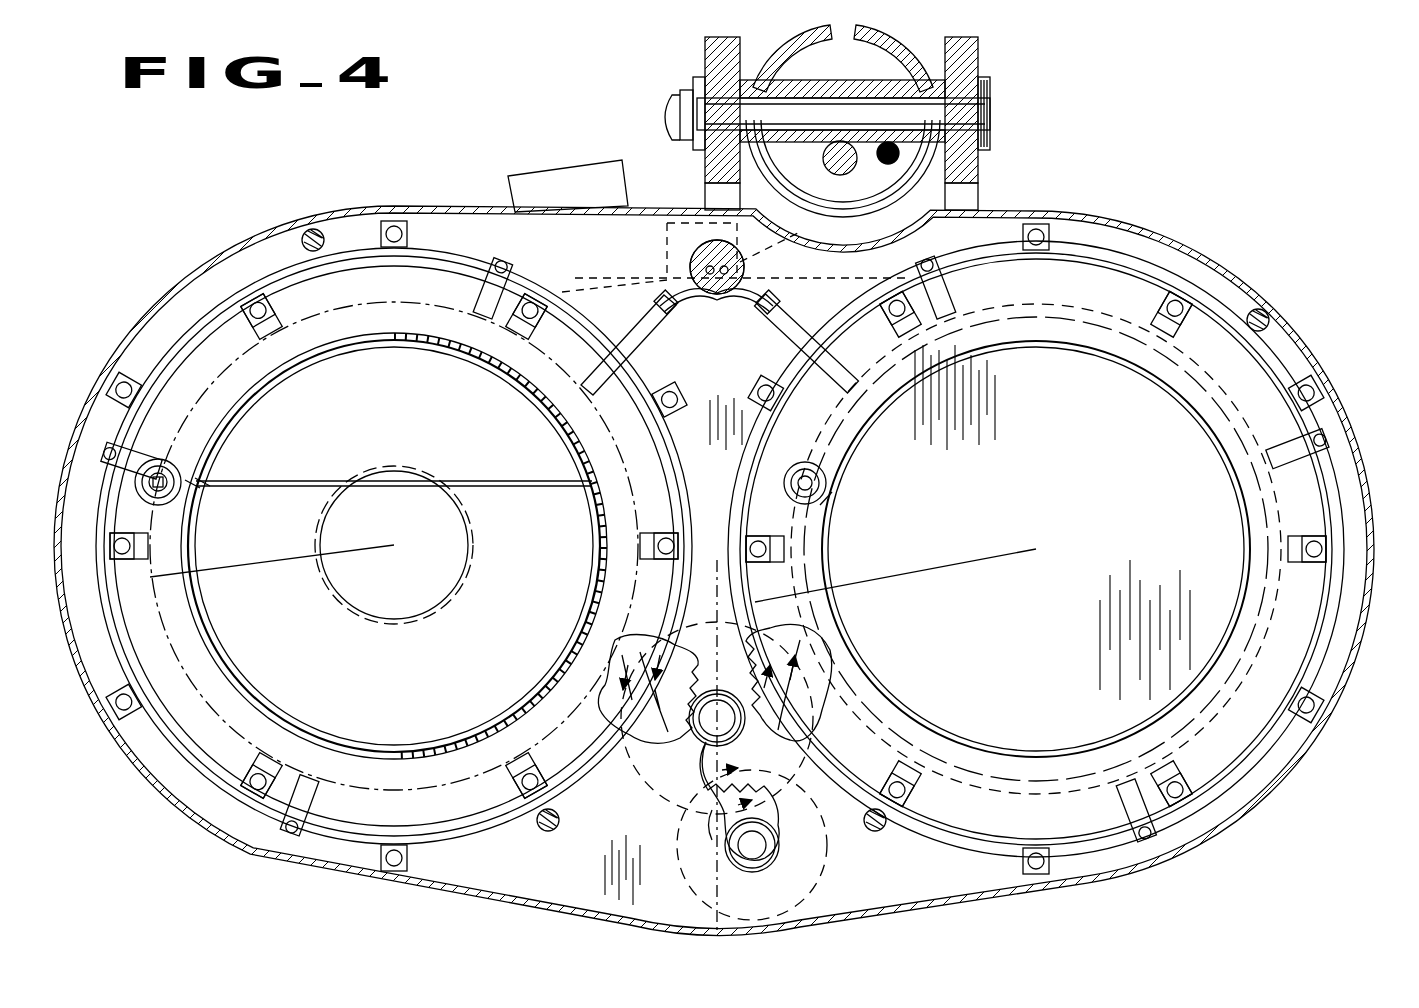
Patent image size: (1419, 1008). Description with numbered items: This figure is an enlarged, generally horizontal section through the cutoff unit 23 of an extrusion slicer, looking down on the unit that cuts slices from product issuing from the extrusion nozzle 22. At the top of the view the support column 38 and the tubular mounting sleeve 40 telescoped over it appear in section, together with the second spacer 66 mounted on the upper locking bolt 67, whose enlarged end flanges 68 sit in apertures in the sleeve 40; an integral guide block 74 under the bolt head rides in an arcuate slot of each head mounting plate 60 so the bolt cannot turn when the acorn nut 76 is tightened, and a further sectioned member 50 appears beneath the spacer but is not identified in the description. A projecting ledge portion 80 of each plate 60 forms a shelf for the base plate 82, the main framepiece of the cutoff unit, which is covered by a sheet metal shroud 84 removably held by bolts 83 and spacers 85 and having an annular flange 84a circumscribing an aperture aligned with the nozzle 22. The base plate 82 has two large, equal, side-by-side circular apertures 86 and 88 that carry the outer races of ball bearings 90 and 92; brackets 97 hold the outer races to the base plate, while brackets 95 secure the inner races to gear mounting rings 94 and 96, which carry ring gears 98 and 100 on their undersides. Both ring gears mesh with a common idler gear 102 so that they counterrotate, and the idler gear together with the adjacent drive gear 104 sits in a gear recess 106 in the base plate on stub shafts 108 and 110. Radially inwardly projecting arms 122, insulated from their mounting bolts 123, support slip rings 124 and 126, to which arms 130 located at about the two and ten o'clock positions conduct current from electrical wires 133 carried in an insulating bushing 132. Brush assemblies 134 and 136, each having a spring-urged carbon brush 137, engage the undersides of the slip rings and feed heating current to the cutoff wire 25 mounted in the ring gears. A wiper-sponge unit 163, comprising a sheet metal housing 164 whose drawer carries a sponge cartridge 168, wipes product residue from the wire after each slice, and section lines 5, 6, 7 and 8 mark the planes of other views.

The extrusion nozzle 22 is at (476, 520).
The cutoff unit 23 is at (1138, 185).
The cutoff wire 25 is at (465, 480).
The support column 38 is at (785, 57).
The tubular mounting sleeve 40 is at (918, 52).
The pin 50 is at (822, 155).
The head mounting plate 60 is at (705, 48).
The second spacer 66 is at (812, 96).
The locking bolt 67 is at (686, 96).
The end flanges 68 is at (700, 80).
The guide block 74 is at (975, 112).
The acorn nut 76 is at (678, 103).
The projecting ledge portion 80 is at (712, 195).
The base plate 82 is at (736, 364).
The bolts 83 is at (320, 230).
The sheet metal shroud 84 is at (238, 252).
The annular flange 84a is at (592, 558).
The spacers 85 is at (302, 232).
The circular aperture 86 is at (260, 562).
The circular aperture 88 is at (965, 562).
The ball bearing 90 is at (370, 258).
The ball bearing 92 is at (1074, 262).
The gear mounting ring 94 is at (185, 518).
The brackets 95 is at (530, 305).
The gear mounting ring 96 is at (828, 505).
The brackets 97 is at (395, 222).
The ring gear 98 is at (625, 672).
The ring gear 100 is at (800, 660).
The idler gear 102 is at (712, 780).
The drive gear 104 is at (728, 822).
The gear chamber or recess 106 is at (822, 878).
The stub shaft 108 is at (706, 732).
The stub shaft 110 is at (745, 852).
The arms 122 is at (478, 292).
The bolts 123 is at (515, 252).
The slip ring 124 is at (560, 375).
The slip ring 126 is at (955, 345).
The arms 130 is at (765, 325).
The electrical insulating bushing 132 is at (748, 264).
The electrical wires 133 is at (717, 306).
The electrical brush assembly 134 is at (170, 478).
The electrical brush assembly 136 is at (828, 488).
The carbon brush 137 is at (172, 487).
The wiper-sponge unit 163 is at (510, 182).
The sheet metal housing 164 is at (565, 165).
The sponge cartridge 168 is at (645, 258).
The section line 5- 5 is at (125, 481).
The section line 6- 6 is at (430, 727).
The section line 7- 7 is at (120, 640).
The section line 8- 8 is at (760, 612).